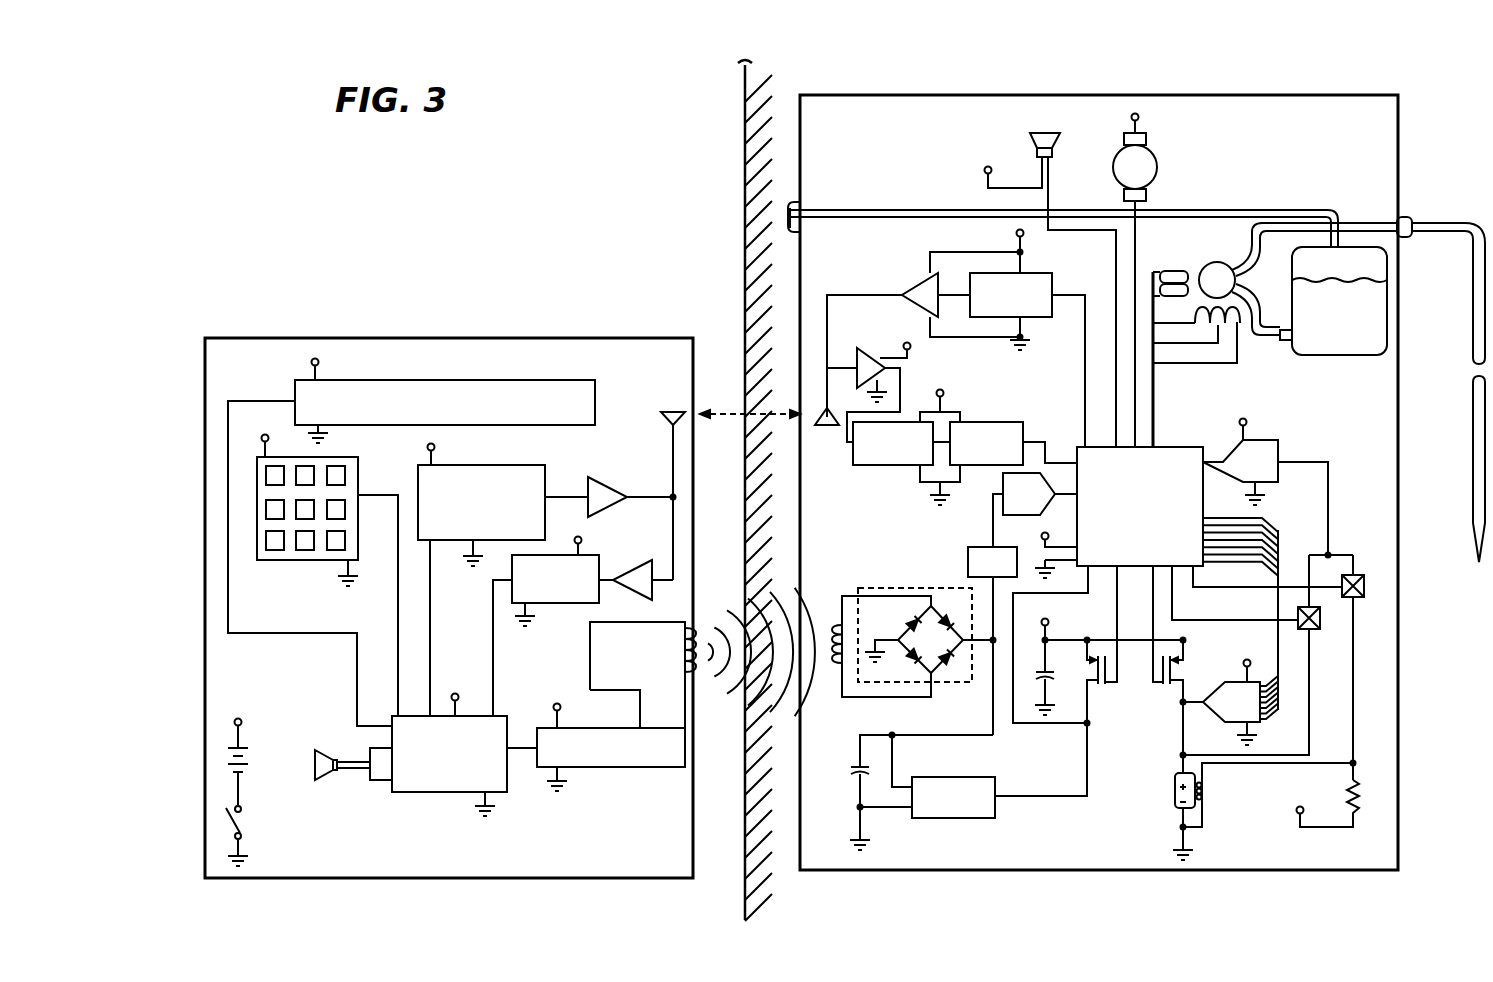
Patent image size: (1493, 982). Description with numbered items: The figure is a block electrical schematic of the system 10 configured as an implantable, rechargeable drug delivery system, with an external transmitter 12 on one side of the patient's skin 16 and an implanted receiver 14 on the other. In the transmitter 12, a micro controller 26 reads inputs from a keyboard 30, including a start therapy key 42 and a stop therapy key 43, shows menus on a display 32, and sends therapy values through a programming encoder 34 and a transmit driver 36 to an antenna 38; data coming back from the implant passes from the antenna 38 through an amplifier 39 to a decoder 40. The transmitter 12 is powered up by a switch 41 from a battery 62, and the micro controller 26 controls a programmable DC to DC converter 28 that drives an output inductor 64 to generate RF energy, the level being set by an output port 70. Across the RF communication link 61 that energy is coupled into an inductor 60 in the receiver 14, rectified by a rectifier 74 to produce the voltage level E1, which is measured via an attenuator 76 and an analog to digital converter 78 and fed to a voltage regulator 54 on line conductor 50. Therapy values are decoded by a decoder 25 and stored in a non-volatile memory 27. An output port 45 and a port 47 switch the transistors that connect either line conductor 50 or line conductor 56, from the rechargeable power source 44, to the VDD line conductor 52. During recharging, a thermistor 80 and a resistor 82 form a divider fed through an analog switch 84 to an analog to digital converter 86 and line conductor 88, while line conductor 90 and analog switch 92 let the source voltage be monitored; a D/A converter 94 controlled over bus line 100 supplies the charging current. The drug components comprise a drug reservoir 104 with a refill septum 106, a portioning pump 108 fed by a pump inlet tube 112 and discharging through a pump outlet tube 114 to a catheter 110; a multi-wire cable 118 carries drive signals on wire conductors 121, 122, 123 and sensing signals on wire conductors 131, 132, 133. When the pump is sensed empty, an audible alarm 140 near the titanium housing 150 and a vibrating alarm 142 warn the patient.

The system 10 is at (362, 180).
The transmitter 12 is at (432, 338).
The receiver 14 is at (934, 95).
The skin 16 is at (743, 152).
The decoder 25 is at (906, 422).
The micro controller 26 is at (480, 716).
The non-volatile memory (EPROM) 27 is at (990, 422).
The programmable DC to DC converter 28 is at (634, 767).
The keyboard 30 is at (291, 563).
The display 32 is at (396, 380).
The programming encoder 34 is at (497, 465).
The transmit driver 36 is at (605, 490).
The antenna 38 is at (675, 455).
The amplifier 39 is at (632, 570).
The decoder 40 is at (560, 603).
The switch 41 is at (242, 822).
The start therapy key 42 is at (270, 541).
The stop therapy key 43 is at (343, 547).
The rechargeable power supply/source 44 is at (1175, 792).
The output port 45 is at (1125, 573).
The port 47 is at (1150, 634).
The line conductor 50 is at (1087, 755).
The line conductor 52 is at (1058, 637).
The voltage regulator 54 is at (975, 806).
The line conductor 56 is at (1180, 737).
The inductor 60 is at (840, 625).
The RF communication link 61 is at (728, 405).
The battery 62 is at (246, 763).
The output inductor 64 is at (680, 646).
The output port 70 is at (518, 752).
The rectifier 74 is at (950, 599).
The attenuator 76 is at (975, 550).
The analog to digital converter 78 is at (1035, 510).
The thermistor 80 is at (1205, 795).
The resistor 82 is at (1343, 790).
The analog switch 84 is at (1366, 582).
The analog to digital converter 86 is at (1283, 452).
The line conductor 88 is at (1225, 426).
The line conductor 90 is at (1300, 755).
The analog switch 92 is at (1322, 632).
The D/A converter 94 is at (1220, 693).
The bus line 100 is at (1280, 548).
The drug reservoir 104 is at (1382, 329).
The refill septum 106 is at (800, 210).
The portioning pump 108 is at (1222, 262).
The catheter 110 is at (1453, 372).
The pump inlet tube 112 is at (1272, 335).
The pump outlet tube 114 is at (1362, 212).
The multi-wire cable 118 is at (1160, 432).
The wire conductor 121 is at (1178, 314).
The wire conductor 122 is at (1178, 335).
The wire conductor 123 is at (1210, 366).
The wire conductor 131 is at (1172, 270).
The wire conductor 132 is at (1162, 290).
The wire conductor 133 is at (1178, 275).
The audible alarm 140 is at (1037, 133).
The vibrating alarm 142 is at (1114, 165).
The titanium housing 150 is at (950, 872).
The voltage level E1 is at (990, 695).